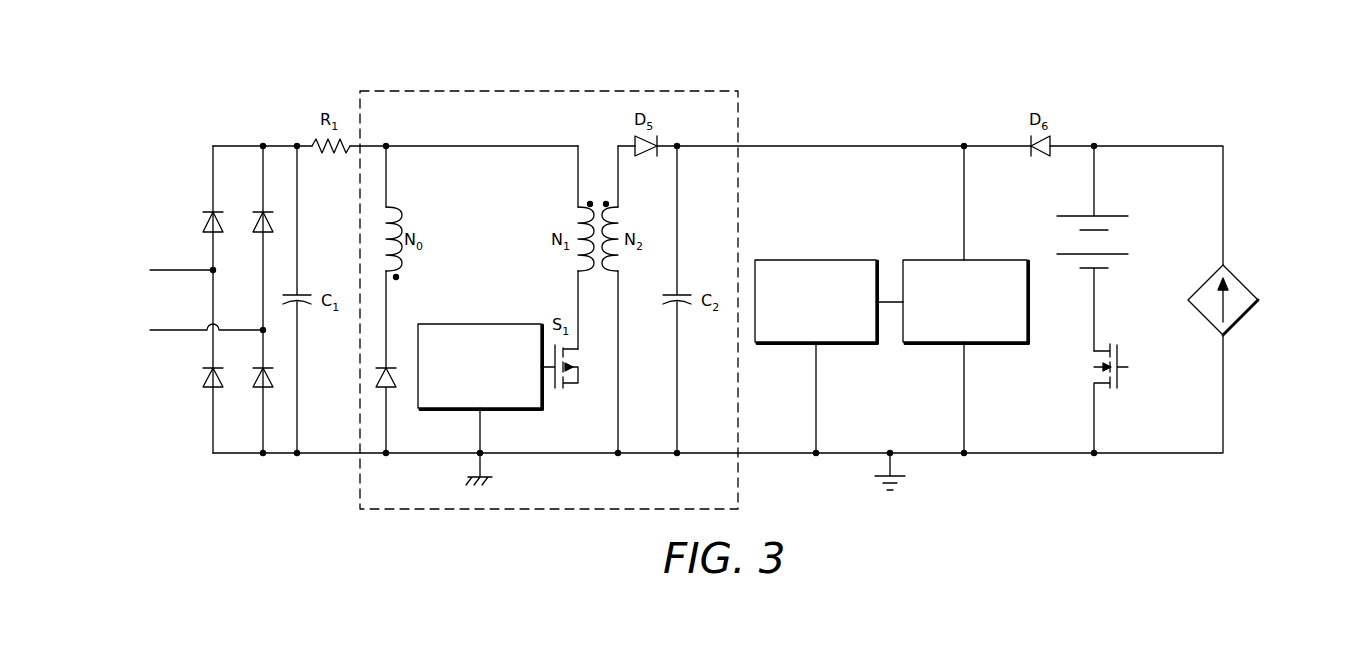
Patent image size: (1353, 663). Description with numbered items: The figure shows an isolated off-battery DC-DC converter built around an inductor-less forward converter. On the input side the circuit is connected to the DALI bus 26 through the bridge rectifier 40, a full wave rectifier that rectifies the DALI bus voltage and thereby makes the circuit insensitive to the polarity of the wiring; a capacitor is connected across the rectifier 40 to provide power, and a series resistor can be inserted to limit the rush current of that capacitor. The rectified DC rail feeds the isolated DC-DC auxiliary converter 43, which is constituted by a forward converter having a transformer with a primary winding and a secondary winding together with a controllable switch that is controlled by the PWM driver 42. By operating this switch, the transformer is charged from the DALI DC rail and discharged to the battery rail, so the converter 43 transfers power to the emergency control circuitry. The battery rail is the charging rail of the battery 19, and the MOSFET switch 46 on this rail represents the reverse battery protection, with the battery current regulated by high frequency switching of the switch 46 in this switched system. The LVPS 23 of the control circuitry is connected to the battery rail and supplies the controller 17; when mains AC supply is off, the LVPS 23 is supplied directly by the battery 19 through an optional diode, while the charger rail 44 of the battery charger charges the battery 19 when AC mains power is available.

The controller 17 is at (853, 258).
The battery 19 is at (1124, 215).
The LVPS 23 is at (1002, 258).
The DALI bus 26 is at (163, 335).
The bridge rectifier 40 is at (236, 147).
The PWM driver 42 is at (519, 323).
The auxiliary converter 43 is at (398, 72).
The charger rail 44 is at (1243, 280).
The MOSFET switch 46 is at (1118, 389).